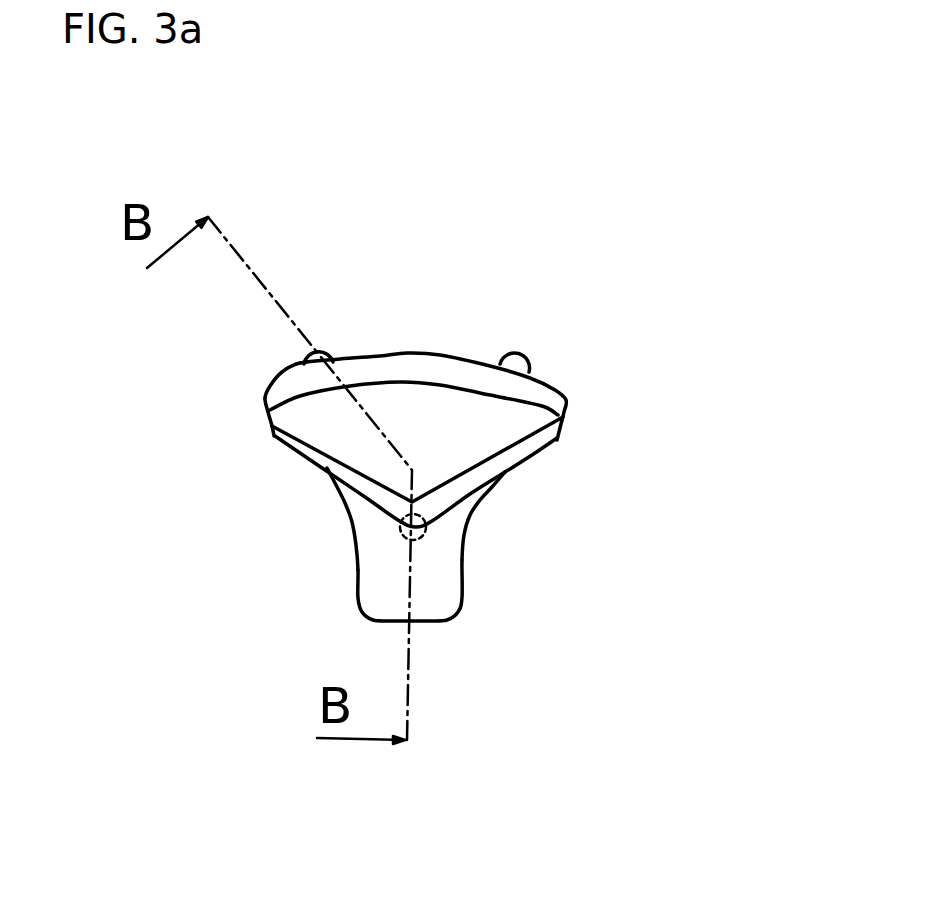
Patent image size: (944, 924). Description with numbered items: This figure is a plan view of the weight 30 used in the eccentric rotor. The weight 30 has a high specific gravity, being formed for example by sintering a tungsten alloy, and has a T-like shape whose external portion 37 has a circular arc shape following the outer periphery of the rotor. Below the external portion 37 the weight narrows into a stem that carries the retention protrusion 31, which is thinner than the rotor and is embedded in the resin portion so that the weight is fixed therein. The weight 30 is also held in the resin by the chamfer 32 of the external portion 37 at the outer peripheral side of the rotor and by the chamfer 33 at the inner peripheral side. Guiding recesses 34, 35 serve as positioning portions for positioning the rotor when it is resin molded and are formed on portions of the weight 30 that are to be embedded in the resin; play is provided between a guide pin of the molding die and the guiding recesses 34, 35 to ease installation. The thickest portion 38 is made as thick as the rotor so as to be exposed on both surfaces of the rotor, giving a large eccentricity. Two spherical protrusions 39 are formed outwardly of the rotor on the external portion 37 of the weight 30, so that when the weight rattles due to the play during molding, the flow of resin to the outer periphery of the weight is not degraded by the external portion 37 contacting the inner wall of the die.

The weight 30 is at (383, 315).
The retention protrusion 31 is at (432, 605).
The chamfer 32 is at (298, 380).
The chamfer 33 is at (467, 495).
The guiding recess 34 is at (268, 410).
The guiding recess 35 is at (563, 428).
The external portion 37 is at (447, 353).
The thickest portion 38 is at (457, 433).
The spherical protrusions 39 is at (330, 347).